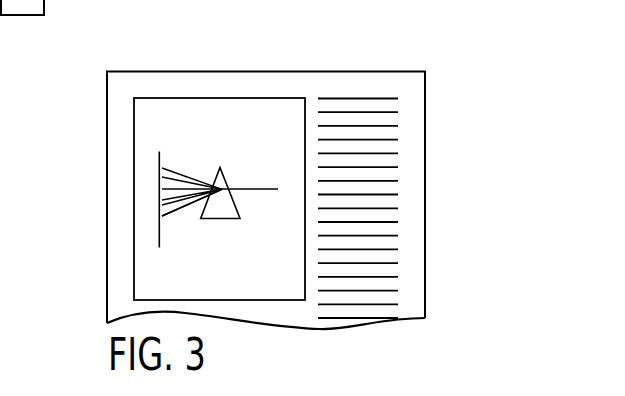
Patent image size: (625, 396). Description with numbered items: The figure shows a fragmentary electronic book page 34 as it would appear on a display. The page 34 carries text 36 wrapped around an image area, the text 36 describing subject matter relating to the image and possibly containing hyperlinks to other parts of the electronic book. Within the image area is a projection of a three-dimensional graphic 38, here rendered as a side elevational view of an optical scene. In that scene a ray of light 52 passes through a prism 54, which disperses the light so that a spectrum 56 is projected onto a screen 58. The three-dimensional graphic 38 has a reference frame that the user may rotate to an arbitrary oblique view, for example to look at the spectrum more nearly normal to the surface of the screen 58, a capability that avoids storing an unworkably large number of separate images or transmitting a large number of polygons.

The page 34 is at (425, 72).
The text 36 is at (388, 152).
The three-dimensional graphic 38 is at (247, 98).
The ray of light 52 is at (251, 188).
The prism 54 is at (212, 218).
The spectrum 56 is at (159, 180).
The screen 58 is at (159, 222).